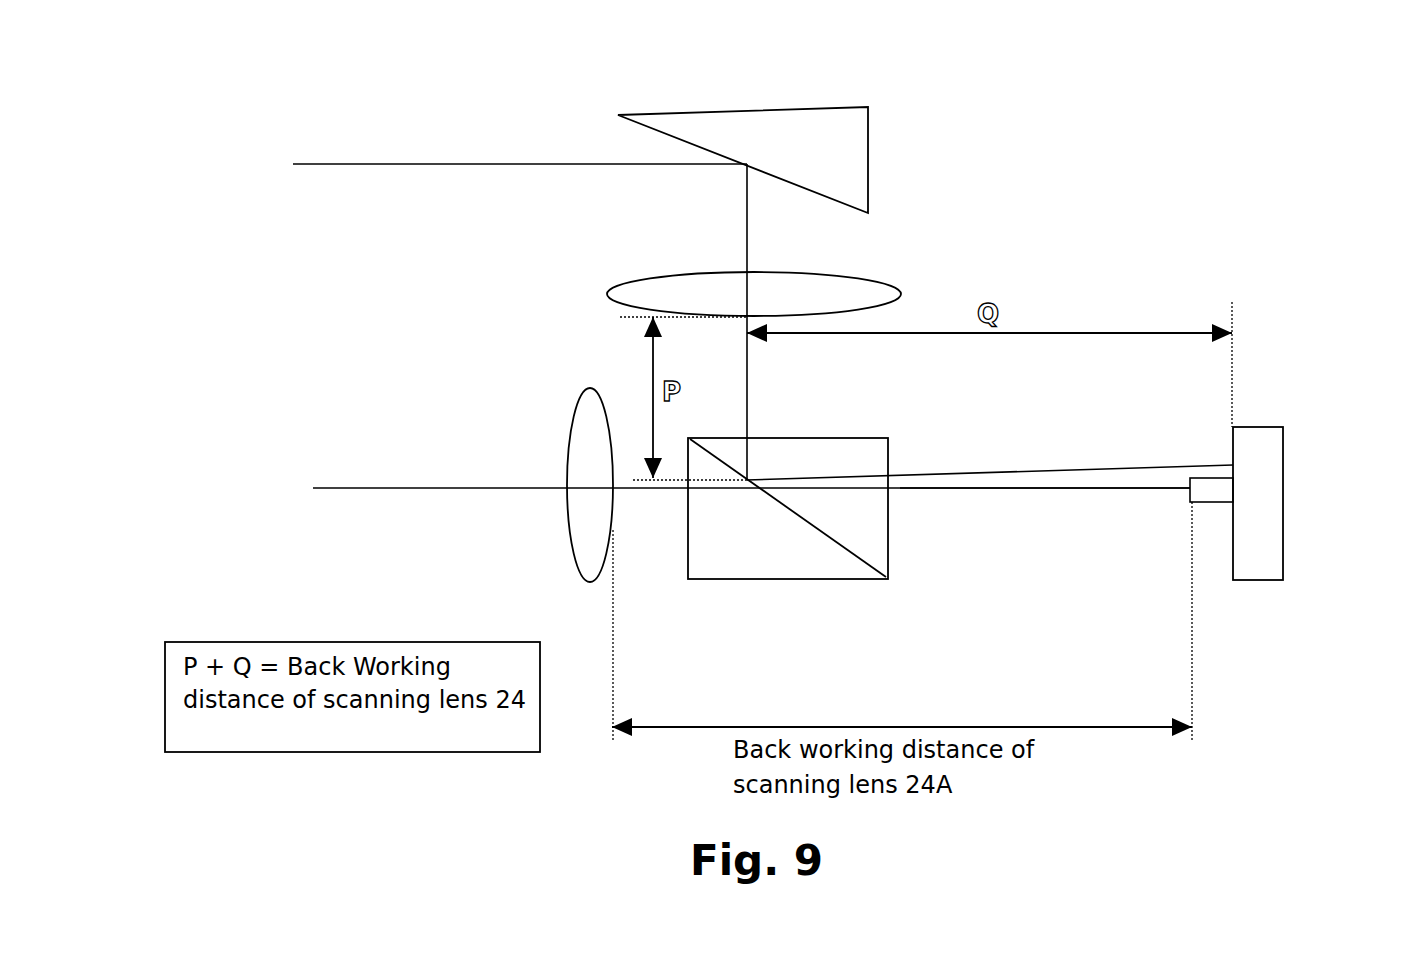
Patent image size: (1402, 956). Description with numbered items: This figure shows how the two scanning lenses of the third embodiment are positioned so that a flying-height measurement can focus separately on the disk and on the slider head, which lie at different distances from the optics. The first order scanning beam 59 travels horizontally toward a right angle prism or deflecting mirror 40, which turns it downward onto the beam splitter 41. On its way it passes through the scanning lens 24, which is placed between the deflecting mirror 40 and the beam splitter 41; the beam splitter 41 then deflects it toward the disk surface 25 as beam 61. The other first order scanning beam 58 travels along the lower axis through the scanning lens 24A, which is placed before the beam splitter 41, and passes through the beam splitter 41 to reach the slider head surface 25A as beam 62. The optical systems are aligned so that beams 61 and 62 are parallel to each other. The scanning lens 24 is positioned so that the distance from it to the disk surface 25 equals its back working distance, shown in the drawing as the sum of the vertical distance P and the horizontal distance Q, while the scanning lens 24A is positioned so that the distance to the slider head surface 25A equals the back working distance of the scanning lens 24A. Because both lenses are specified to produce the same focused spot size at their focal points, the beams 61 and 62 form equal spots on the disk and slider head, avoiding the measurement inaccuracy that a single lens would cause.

The first order scanning beam 59 is at (362, 164).
The deflecting mirror 40 is at (717, 107).
The scanning lens 24 is at (890, 285).
The beam splitter 41 is at (818, 438).
The first order scanning beam 58 is at (342, 488).
The scanning lens 24A is at (567, 532).
The beam 61 is at (1087, 465).
The beam 62 is at (1083, 493).
The disk surface 25 is at (1250, 427).
The slider head surface 25A is at (1208, 502).